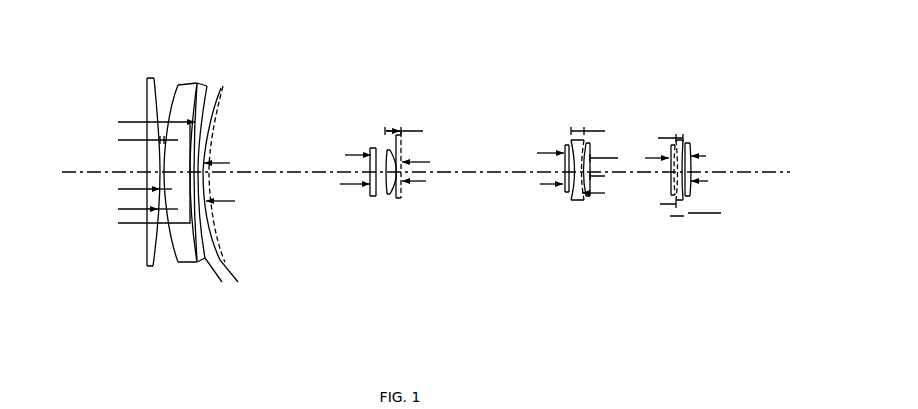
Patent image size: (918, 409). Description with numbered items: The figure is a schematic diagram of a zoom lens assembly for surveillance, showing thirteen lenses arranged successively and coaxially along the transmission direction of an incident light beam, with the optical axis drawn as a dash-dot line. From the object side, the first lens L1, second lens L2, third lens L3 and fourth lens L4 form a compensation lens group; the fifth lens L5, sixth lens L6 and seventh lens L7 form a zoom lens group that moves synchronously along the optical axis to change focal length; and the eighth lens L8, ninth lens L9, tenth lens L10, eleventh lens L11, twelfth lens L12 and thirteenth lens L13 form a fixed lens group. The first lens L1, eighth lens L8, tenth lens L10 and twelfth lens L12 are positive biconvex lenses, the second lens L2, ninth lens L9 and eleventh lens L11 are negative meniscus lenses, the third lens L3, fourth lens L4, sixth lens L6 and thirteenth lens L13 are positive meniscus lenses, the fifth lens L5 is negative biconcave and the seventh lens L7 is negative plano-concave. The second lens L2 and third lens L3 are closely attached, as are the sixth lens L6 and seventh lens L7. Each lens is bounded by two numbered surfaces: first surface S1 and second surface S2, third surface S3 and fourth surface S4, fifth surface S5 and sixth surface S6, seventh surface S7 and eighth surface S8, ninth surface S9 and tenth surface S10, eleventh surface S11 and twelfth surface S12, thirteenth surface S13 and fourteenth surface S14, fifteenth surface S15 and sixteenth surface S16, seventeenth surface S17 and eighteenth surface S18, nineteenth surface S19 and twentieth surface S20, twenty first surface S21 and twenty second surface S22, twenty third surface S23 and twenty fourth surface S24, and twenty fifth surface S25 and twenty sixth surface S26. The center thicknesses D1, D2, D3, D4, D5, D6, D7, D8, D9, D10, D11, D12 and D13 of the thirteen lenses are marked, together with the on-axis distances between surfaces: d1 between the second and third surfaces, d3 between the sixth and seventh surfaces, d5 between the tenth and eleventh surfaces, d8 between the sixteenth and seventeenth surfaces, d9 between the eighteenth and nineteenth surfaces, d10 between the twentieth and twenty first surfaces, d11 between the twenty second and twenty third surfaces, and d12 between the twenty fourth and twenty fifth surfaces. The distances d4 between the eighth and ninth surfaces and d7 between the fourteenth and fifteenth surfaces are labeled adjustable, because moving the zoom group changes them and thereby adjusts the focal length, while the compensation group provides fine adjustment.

The first lens L1 is at (147, 77).
The second lens L2 is at (185, 80).
The third lens L3 is at (207, 86).
The fourth lens L4 is at (222, 87).
The fifth lens L5 is at (371, 146).
The sixth lens L6 is at (388, 148).
The seventh lens L7 is at (400, 133).
The eighth lens L8 is at (565, 143).
The ninth lens L9 is at (573, 140).
The tenth lens L10 is at (583, 140).
The eleventh lens L11 is at (670, 144).
The twelfth lens L12 is at (680, 138).
The thirteenth lens L13 is at (691, 148).
The first surface S1 is at (147, 264).
The second surface S2 is at (170, 257).
The third surface S3 is at (183, 246).
The fourth surface S4 is at (194, 254).
The fifth surface S5 is at (197, 262).
The sixth surface S6 is at (201, 252).
The seventh surface S7 is at (214, 249).
The eighth surface S8 is at (221, 242).
The ninth surface S9 is at (371, 195).
The tenth surface S10 is at (377, 194).
The eleventh surface S11 is at (385, 194).
The twelfth surface S12 is at (392, 194).
The thirteenth surface S13 is at (397, 195).
The fourteenth surface S14 is at (402, 194).
The fifteenth surface S15 is at (564, 192).
The sixteenth surface S16 is at (569, 192).
The seventeenth surface S17 is at (573, 194).
The eighteenth surface S18 is at (578, 194).
The nineteenth surface S19 is at (581, 195).
The twentieth surface S20 is at (590, 195).
The twenty first surface S21 is at (671, 196).
The twenty second surface S22 is at (677, 197).
The twenty third surface S23 is at (683, 197).
The twenty fourth surface S24 is at (687, 194).
The twenty fifth surface S25 is at (690, 191).
The twenty sixth surface S26 is at (693, 189).
The distance between the second surface and the third surface d1 is at (139, 139).
The distance between the sixth surface and the seventh surface d3 is at (147, 122).
The distance between the eighth surface and the ninth surface d4 is at (269, 160).
The distance between the tenth surface and the eleventh surface d5 is at (349, 152).
The distance between the fourteenth surface and the fifteenth surface d7 is at (470, 160).
The distance between the sixteenth surface and the seventeenth surface d8 is at (543, 152).
The distance between the eighteenth surface and the nineteenth surface d9 is at (598, 130).
The distance between the twentieth surface and the twenty first surface d10 is at (629, 157).
The distance between the twenty second surface and the twenty third surface d11 is at (659, 137).
The distance between the twenty fourth surface and the twenty fifth surface d12 is at (713, 155).
The center thickness of the first lens D1 is at (136, 188).
The center thickness of the second lens D2 is at (139, 208).
The center thickness of the third lens D3 is at (145, 176).
The center thickness of the fourth lens D4 is at (231, 200).
The center thickness of the fifth lens D5 is at (346, 183).
The center thickness of the sixth lens D6 is at (425, 180).
The center thickness of the seventh lens D7 is at (415, 130).
The center thickness of the eighth lens D8 is at (542, 183).
The center thickness of the ninth lens D9 is at (604, 192).
The center thickness of the tenth lens D10 is at (613, 175).
The center thickness of the eleventh lens D11 is at (655, 203).
The center thickness of the twelfth lens D12 is at (711, 212).
The center thickness of the thirteenth lens D13 is at (715, 180).